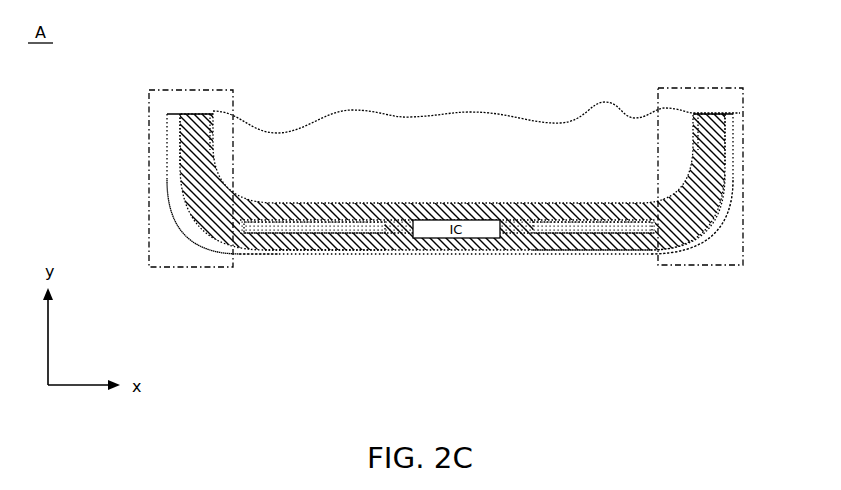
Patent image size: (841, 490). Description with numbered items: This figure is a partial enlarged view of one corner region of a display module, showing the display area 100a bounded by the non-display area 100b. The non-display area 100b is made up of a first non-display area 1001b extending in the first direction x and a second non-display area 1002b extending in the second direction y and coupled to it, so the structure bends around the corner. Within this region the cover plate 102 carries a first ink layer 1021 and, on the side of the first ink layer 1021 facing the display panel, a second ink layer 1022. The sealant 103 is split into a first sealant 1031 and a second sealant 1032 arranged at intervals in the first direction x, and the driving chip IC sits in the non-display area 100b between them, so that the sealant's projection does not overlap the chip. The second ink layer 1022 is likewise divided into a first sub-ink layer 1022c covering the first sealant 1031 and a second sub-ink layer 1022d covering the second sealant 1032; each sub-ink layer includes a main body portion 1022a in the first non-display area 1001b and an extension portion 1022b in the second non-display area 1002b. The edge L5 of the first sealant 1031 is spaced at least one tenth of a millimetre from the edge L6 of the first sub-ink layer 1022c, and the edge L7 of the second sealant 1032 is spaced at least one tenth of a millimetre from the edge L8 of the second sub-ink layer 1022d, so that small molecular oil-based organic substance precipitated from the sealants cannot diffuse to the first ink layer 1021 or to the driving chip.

The display area 100a is at (541, 143).
The non-display area 100b is at (449, 281).
The cover plate 102 is at (422, 221).
The first ink layer 1021 is at (182, 142).
The second ink layer 1022 is at (451, 221).
The main body portion 1022a is at (595, 254).
The extension portion 1022b is at (705, 217).
The first sub-ink layer 1022c is at (715, 178).
The second sub-ink layer 1022d is at (207, 190).
The first non-display area 1001b is at (263, 255).
The second non-display area 1002b is at (170, 252).
The sealant 103 is at (457, 298).
The first sealant 1031 is at (628, 252).
The second sealant 1032 is at (300, 250).
The edge of the first sealant L5 is at (560, 238).
The edge of the first sub-ink layer L6 is at (528, 249).
The edge of the second sealant L7 is at (332, 238).
The edge of the second sub-ink layer L8 is at (358, 246).